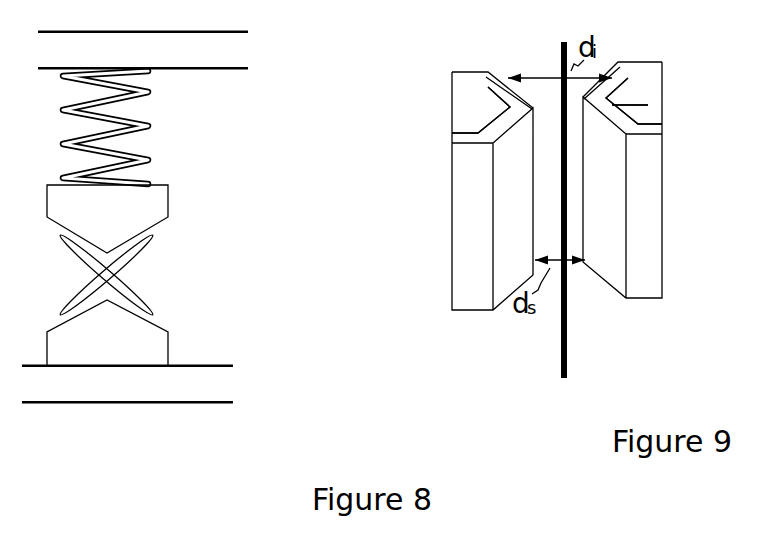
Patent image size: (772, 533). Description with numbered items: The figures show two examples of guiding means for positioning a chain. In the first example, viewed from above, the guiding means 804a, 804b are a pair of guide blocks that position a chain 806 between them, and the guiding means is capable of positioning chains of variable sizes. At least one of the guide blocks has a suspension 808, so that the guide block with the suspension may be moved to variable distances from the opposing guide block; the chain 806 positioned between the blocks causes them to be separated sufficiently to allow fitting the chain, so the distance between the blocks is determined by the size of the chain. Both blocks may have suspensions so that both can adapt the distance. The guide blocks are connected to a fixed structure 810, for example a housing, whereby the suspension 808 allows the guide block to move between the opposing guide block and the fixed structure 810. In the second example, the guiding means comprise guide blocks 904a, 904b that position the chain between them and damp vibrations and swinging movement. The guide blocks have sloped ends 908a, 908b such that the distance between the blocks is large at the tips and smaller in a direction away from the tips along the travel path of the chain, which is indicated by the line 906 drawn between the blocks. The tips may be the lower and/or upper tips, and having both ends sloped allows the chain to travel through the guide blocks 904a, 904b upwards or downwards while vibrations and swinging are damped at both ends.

In FIG. 8, the guiding means 804a is at (107, 333).
In FIG. 8, the guiding means 804b is at (107, 219).
In FIG. 8, the chain 806 is at (146, 301).
In FIG. 8, the suspension 808 is at (149, 160).
In FIG. 8, the fixed structure 810 is at (135, 217).
In FIG. 9, the guide block 904a is at (450, 79).
In FIG. 9, the guide block 904b is at (661, 63).
In FIG. 9, the separation plane 906 is at (568, 366).
In FIG. 9, the sloped end 908a is at (493, 120).
In FIG. 9, the sloped end 908b is at (662, 124).